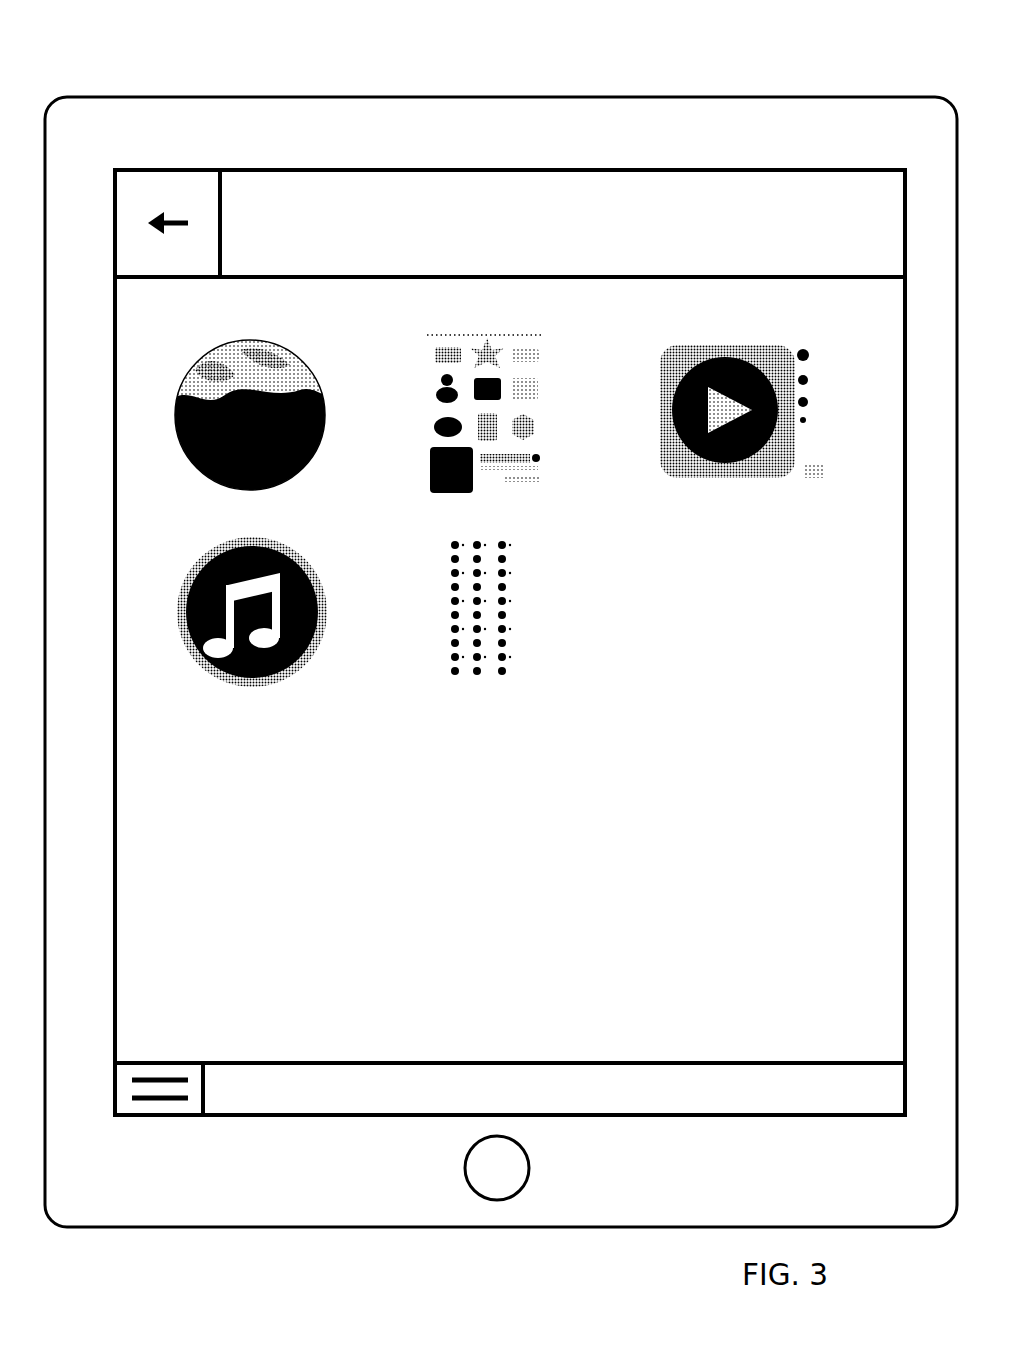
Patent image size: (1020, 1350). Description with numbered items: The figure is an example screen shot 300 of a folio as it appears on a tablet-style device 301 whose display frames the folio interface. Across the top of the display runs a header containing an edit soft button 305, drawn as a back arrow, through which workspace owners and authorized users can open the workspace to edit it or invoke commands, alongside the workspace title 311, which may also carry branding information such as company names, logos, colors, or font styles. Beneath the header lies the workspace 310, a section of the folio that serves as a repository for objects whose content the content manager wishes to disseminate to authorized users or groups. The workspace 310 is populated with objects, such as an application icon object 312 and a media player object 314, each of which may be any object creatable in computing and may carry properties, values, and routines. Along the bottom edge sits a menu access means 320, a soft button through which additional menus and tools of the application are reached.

The screen shot 300 is at (501, 617).
The computing device housing 301 is at (406, 93).
The edit soft button 305 is at (166, 178).
The workspace 310 is at (497, 596).
The workspace title 311 is at (682, 212).
The object 312 is at (544, 597).
The object 314 is at (750, 496).
The menu access means 320 is at (170, 1053).